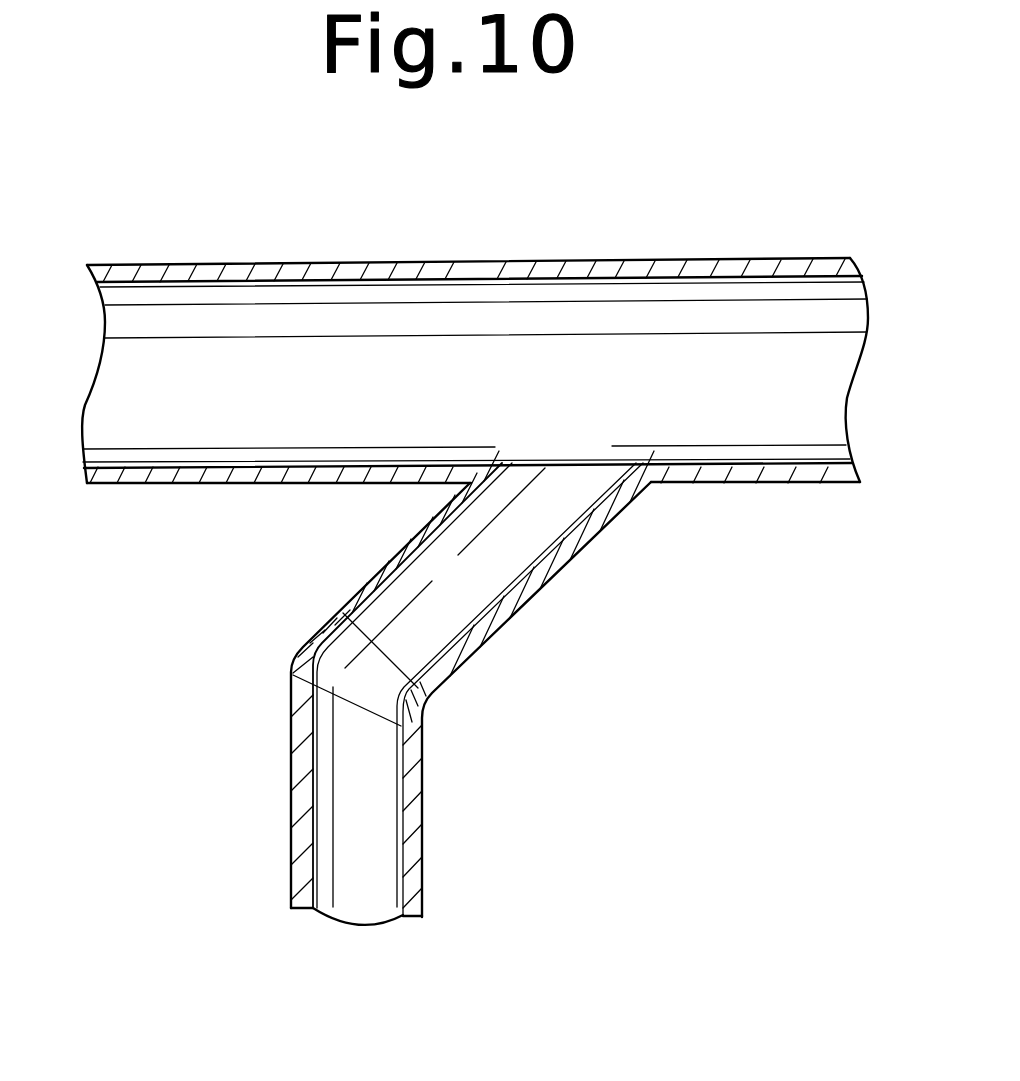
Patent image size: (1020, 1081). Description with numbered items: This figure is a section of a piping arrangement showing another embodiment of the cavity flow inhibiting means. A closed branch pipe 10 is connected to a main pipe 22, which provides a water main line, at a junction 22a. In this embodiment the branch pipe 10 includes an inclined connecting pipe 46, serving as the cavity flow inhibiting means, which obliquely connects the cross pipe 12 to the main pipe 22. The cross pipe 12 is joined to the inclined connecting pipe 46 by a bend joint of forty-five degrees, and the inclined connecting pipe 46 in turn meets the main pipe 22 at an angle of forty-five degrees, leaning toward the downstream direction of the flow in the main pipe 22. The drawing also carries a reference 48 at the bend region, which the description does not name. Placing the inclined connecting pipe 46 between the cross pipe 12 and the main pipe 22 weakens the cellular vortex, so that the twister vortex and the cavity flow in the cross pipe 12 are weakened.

The branch pipe 10 is at (512, 756).
The cross pipe 12 is at (290, 781).
The main pipe 22 is at (700, 260).
The junction 22a is at (508, 466).
The inclined connecting pipe 46 is at (573, 560).
The connecting sleeve 48 is at (320, 632).